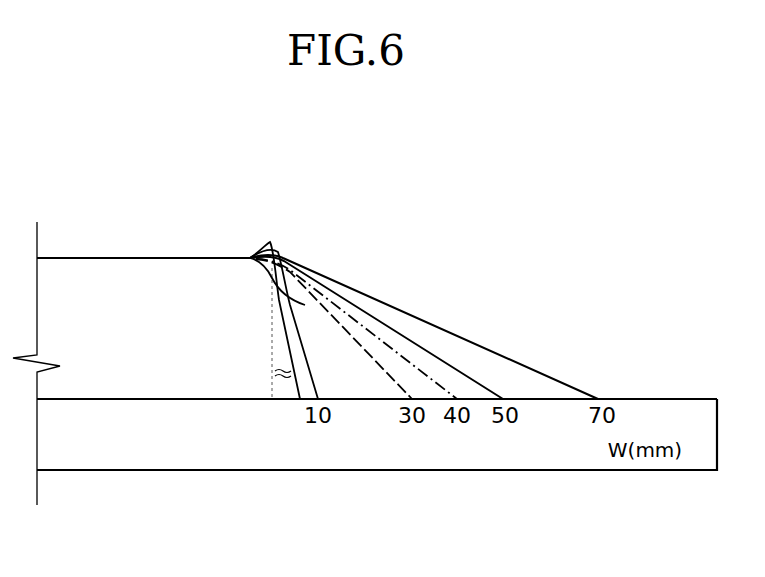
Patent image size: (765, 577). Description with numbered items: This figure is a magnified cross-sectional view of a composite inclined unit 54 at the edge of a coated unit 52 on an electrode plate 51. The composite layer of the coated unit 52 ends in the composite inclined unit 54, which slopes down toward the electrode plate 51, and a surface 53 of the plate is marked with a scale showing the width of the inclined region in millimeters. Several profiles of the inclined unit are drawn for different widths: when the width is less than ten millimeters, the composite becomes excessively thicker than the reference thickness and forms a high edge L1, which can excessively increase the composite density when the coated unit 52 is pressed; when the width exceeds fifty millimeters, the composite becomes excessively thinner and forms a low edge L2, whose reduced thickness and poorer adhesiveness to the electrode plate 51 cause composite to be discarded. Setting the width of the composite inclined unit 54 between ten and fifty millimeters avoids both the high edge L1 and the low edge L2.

The electrode plate 51 is at (188, 448).
The coated unit 52 is at (128, 276).
The irradiated surface 53 is at (647, 399).
The composite inclined unit 54 is at (282, 379).
The high edge L1 is at (271, 241).
The low edge L2 is at (272, 279).